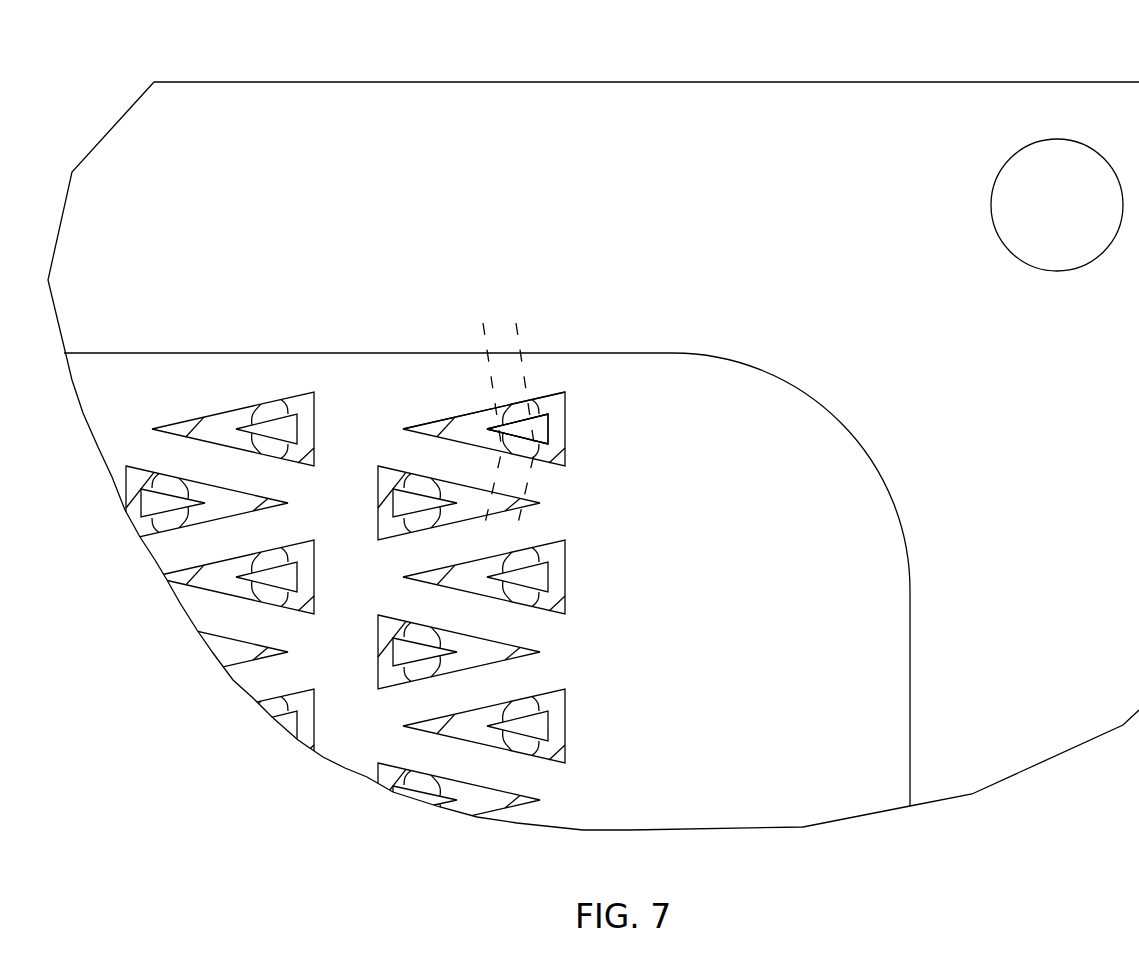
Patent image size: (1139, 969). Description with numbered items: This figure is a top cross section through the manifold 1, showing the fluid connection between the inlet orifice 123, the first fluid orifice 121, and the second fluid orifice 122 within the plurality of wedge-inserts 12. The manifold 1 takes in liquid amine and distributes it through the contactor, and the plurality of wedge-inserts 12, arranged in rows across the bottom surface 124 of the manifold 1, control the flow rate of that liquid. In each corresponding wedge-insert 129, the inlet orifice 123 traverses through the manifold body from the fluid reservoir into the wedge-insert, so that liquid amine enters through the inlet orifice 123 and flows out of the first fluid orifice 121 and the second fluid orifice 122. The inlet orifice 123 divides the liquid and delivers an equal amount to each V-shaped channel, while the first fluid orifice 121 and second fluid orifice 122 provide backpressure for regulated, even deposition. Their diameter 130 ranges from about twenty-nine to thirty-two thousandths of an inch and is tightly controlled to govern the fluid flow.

The manifold 1 is at (593, 125).
The plurality of wedge-inserts 12 is at (314, 430).
The first fluid orifice 121 is at (521, 414).
The second fluid orifice 122 is at (522, 443).
The inlet orifice 123 is at (537, 425).
The bottom surface 124 is at (487, 579).
The corresponding wedge-insert 129 is at (427, 423).
The diameter 130 is at (465, 400).